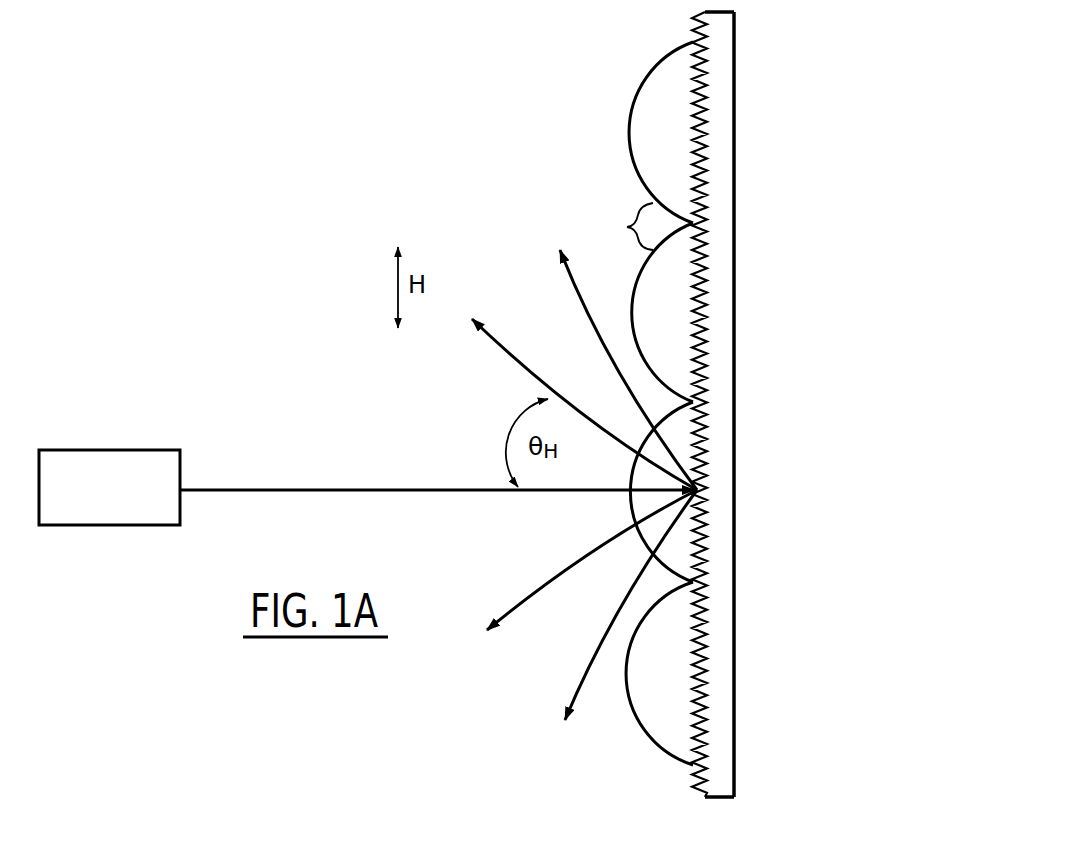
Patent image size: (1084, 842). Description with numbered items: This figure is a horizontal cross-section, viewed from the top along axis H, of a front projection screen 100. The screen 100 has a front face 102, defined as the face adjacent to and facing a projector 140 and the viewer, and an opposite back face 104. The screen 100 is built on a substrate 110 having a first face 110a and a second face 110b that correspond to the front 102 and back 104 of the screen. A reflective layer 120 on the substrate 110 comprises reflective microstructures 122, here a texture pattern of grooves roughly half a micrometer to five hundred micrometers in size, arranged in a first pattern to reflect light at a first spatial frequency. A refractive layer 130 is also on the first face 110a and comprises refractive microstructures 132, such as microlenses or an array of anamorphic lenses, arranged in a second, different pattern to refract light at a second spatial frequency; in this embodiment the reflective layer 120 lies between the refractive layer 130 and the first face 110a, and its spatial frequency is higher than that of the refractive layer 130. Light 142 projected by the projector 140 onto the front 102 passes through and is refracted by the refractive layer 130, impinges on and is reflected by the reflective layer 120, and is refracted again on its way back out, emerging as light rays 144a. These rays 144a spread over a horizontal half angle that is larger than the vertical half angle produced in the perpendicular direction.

The projection screen 100 is at (877, 107).
The front face 102 is at (515, 170).
The back face 104 is at (773, 193).
The substrate 110 is at (720, 404).
The first face 110a is at (690, 338).
The second face 110b is at (735, 315).
The reflective layer 120 is at (678, 138).
The reflective microstructures 122 is at (695, 102).
The refractive layer 130 is at (635, 57).
The refractive microstructures 132 is at (620, 226).
The projector 140 is at (110, 450).
The light 142 is at (284, 490).
The light rays 144a is at (530, 367).